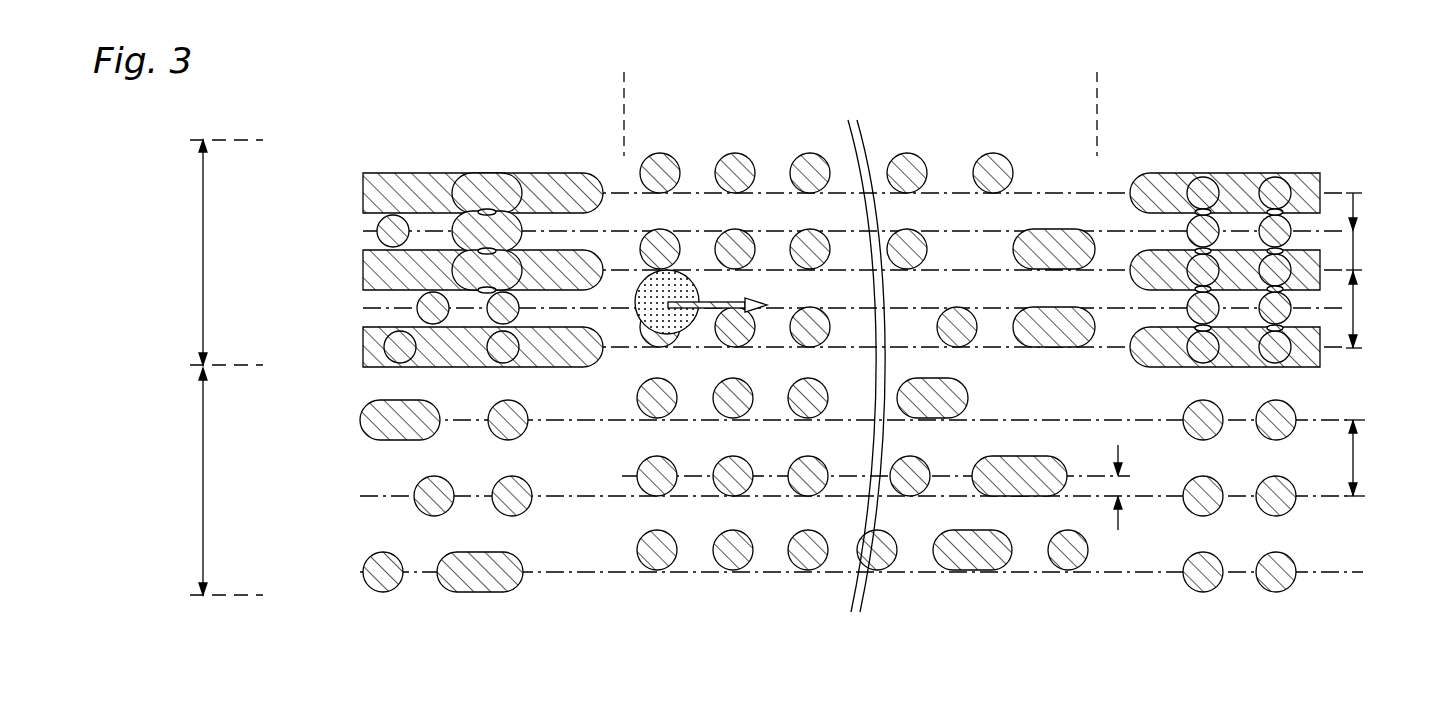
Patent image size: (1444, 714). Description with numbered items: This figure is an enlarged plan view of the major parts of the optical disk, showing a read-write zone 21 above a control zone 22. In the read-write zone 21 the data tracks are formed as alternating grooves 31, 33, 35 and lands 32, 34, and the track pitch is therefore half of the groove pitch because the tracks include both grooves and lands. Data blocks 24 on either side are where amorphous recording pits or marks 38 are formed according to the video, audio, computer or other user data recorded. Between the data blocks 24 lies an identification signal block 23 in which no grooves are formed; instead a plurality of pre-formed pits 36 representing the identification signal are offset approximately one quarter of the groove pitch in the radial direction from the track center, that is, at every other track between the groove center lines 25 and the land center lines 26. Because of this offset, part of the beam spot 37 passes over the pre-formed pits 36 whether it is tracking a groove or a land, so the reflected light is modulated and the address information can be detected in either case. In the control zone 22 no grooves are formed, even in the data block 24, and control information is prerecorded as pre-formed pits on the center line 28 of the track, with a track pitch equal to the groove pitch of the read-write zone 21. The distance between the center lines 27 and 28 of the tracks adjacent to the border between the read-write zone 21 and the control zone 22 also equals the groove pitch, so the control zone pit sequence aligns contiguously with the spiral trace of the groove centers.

The read-write zone 21 is at (192, 252).
The control zone 22 is at (171, 481).
The identification signal block 23 is at (626, 84).
The data block 24 is at (622, 84).
The groove center line 25 is at (1360, 193).
The land center line 26 is at (1360, 231).
The center line of data track adjacent to zone border 27 is at (1358, 348).
The center line of the track 28 is at (1357, 420).
The groove 31 is at (366, 186).
The land 32 is at (370, 222).
The groove 33 is at (368, 264).
The land 34 is at (372, 300).
The groove 35 is at (368, 342).
The pre-formed pit 36 is at (655, 557).
The beam spot 37 is at (647, 344).
The amorphous recording pit (mark) 38 is at (485, 180).